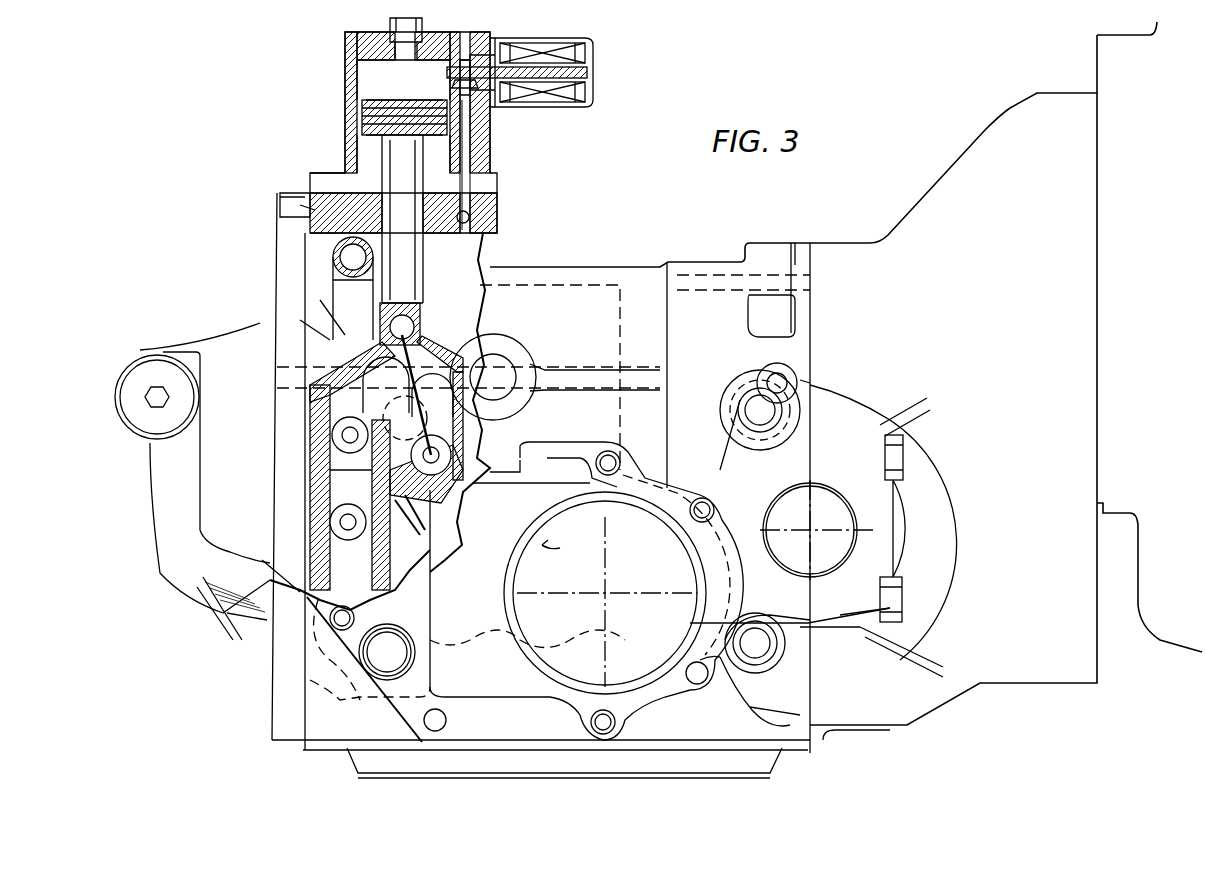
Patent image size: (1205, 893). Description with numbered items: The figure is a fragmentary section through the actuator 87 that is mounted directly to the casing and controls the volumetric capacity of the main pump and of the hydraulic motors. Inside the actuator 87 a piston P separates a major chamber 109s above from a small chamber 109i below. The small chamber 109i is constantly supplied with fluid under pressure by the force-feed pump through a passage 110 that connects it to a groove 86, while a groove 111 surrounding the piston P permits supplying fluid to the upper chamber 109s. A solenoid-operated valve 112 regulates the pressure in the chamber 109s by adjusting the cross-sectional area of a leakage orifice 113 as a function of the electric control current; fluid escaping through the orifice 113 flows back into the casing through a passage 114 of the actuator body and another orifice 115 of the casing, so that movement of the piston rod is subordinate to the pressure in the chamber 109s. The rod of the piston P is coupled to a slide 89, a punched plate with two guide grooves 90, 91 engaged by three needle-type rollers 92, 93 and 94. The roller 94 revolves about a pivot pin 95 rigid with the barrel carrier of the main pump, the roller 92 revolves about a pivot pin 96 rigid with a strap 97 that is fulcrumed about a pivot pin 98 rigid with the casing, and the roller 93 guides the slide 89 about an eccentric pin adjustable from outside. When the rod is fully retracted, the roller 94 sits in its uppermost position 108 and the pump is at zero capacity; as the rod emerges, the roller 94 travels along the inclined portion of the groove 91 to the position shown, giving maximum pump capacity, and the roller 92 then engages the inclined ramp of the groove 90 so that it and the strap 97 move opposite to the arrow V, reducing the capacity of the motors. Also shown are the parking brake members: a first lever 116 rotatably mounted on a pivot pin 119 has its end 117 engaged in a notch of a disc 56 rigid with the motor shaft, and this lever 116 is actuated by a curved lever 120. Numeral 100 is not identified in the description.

The disc 56 is at (672, 675).
The groove 86 is at (462, 205).
The actuator 87 is at (355, 95).
The slide 89 is at (338, 282).
The guide groove 90 is at (337, 502).
The guide groove 91 is at (405, 490).
The roller 92 is at (337, 433).
The roller 93 is at (270, 563).
The roller 94 is at (472, 505).
The pivot pin 95 is at (313, 377).
The pivot pin 96 is at (340, 470).
The strap 97 is at (345, 335).
The pivot pin 98 is at (357, 257).
The pin 100 is at (347, 523).
The uppermost position 108 is at (340, 375).
The major chamber 109s is at (403, 87).
The small chamber 109i is at (370, 160).
The passage 110 is at (340, 200).
The groove 111 is at (453, 118).
The solenoid-operated valve 112 is at (555, 35).
The leakage orifice 113 is at (485, 95).
The passage 114 is at (463, 152).
The orifice 115 is at (469, 216).
The first lever 116 is at (723, 673).
The end of first lever 117 is at (670, 698).
The pivot pin 119 is at (760, 645).
The curved lever 120 is at (937, 523).
The piston P is at (373, 118).
The arrow V is at (138, 438).